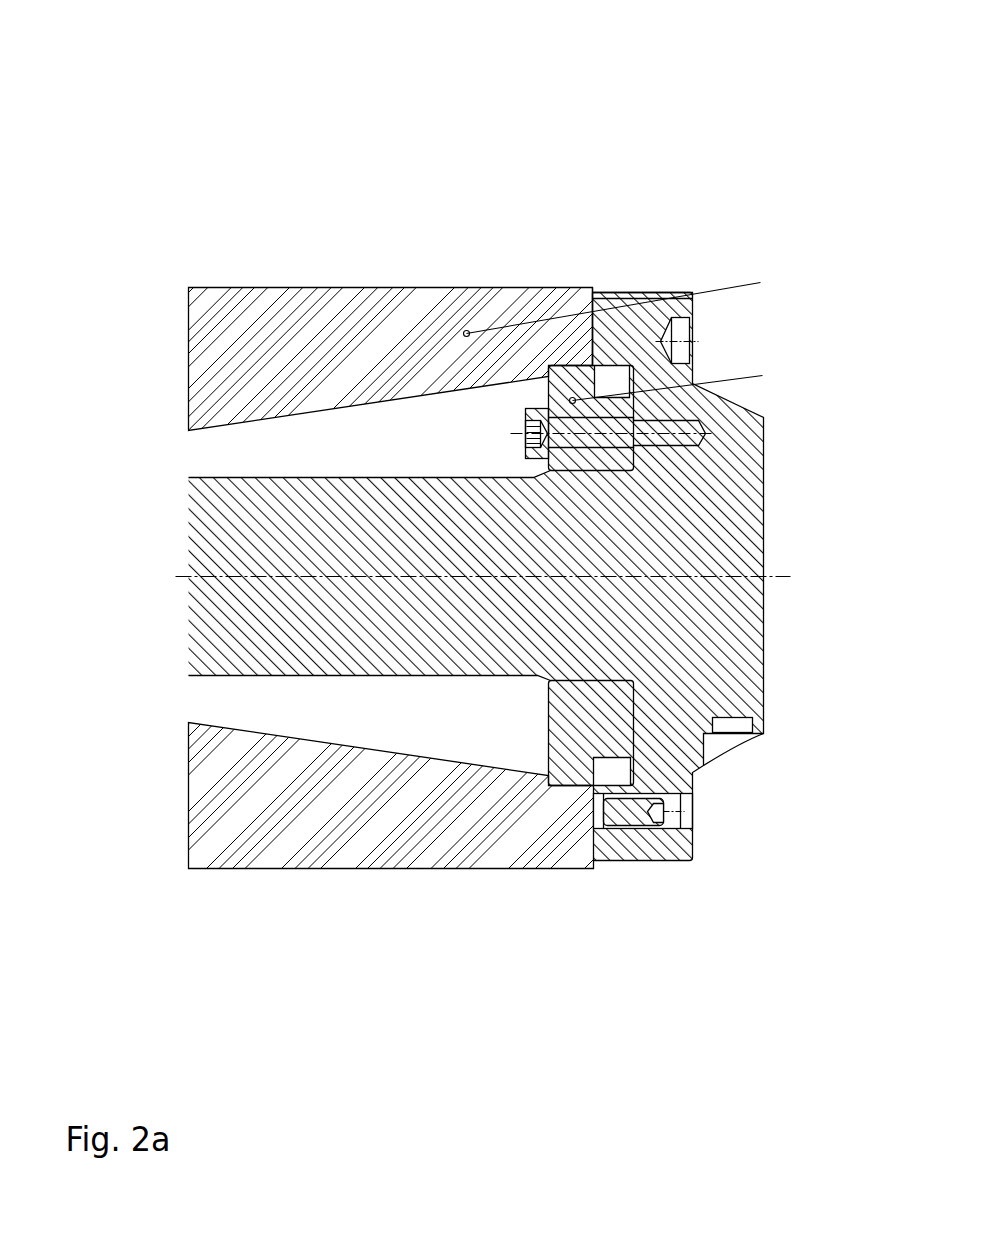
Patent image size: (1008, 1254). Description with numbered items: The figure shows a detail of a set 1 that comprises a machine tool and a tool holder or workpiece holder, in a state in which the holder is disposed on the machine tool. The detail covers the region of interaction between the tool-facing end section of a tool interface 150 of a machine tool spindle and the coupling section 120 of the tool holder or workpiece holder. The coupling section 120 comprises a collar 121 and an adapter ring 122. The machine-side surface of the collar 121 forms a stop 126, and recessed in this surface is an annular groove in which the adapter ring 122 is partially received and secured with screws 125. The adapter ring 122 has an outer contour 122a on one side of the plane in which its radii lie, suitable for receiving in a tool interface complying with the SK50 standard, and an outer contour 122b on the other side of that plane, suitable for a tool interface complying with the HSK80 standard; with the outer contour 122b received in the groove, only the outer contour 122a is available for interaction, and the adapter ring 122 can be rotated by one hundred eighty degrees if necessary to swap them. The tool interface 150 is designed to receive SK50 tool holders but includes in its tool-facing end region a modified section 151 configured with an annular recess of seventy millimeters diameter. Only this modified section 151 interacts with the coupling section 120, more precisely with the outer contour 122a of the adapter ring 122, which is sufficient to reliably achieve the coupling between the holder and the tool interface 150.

The set 1 is at (368, 125).
The coupling section 120 is at (752, 910).
The collar 121 is at (693, 290).
The adapter ring 122 is at (690, 782).
The outer contour 122a is at (548, 786).
The outer contour 122b is at (668, 292).
The screws 125 is at (693, 365).
The stop 126 is at (607, 289).
The tool interface 150 is at (253, 323).
The modified section 151 is at (585, 273).